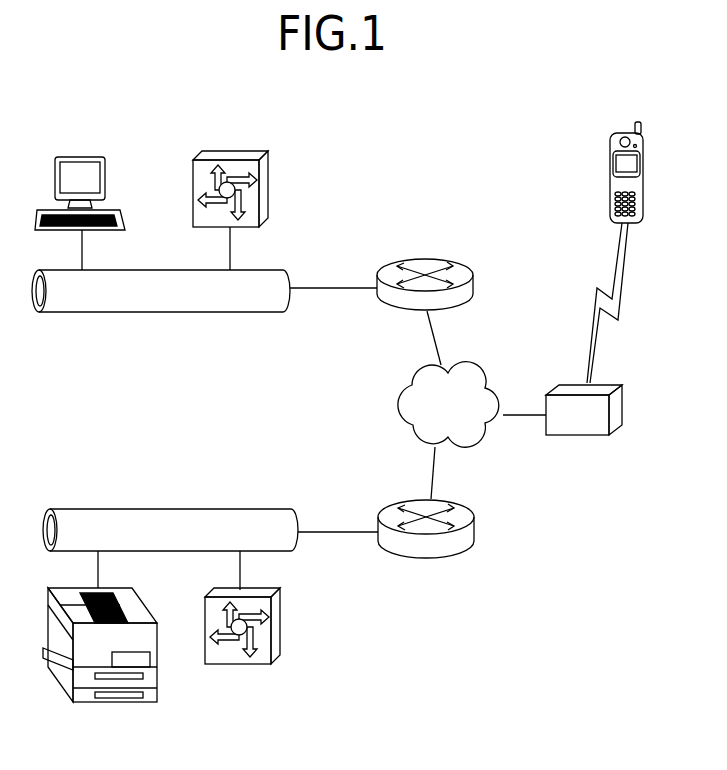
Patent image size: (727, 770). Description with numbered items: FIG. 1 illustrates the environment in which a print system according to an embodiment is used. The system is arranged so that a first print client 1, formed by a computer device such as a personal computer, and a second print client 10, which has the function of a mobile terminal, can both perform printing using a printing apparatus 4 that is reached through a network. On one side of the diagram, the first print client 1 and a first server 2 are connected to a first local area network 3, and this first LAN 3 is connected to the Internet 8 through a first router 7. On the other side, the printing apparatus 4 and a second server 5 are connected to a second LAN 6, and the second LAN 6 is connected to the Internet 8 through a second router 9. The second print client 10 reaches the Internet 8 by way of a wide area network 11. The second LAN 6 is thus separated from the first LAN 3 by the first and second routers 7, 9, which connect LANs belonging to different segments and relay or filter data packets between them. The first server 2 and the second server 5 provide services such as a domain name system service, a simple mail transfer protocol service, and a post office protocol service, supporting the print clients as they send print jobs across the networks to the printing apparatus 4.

The first print client 1 is at (80, 153).
The first server 2 is at (233, 150).
The first local area network 3 is at (273, 265).
The printing apparatus 4 is at (117, 588).
The second server 5 is at (267, 588).
The second LAN 6 is at (235, 510).
The first router 7 is at (415, 253).
The Internet 8 is at (480, 367).
The second router 9 is at (457, 503).
The second print client 10 is at (613, 133).
The wide area network 11 is at (605, 383).